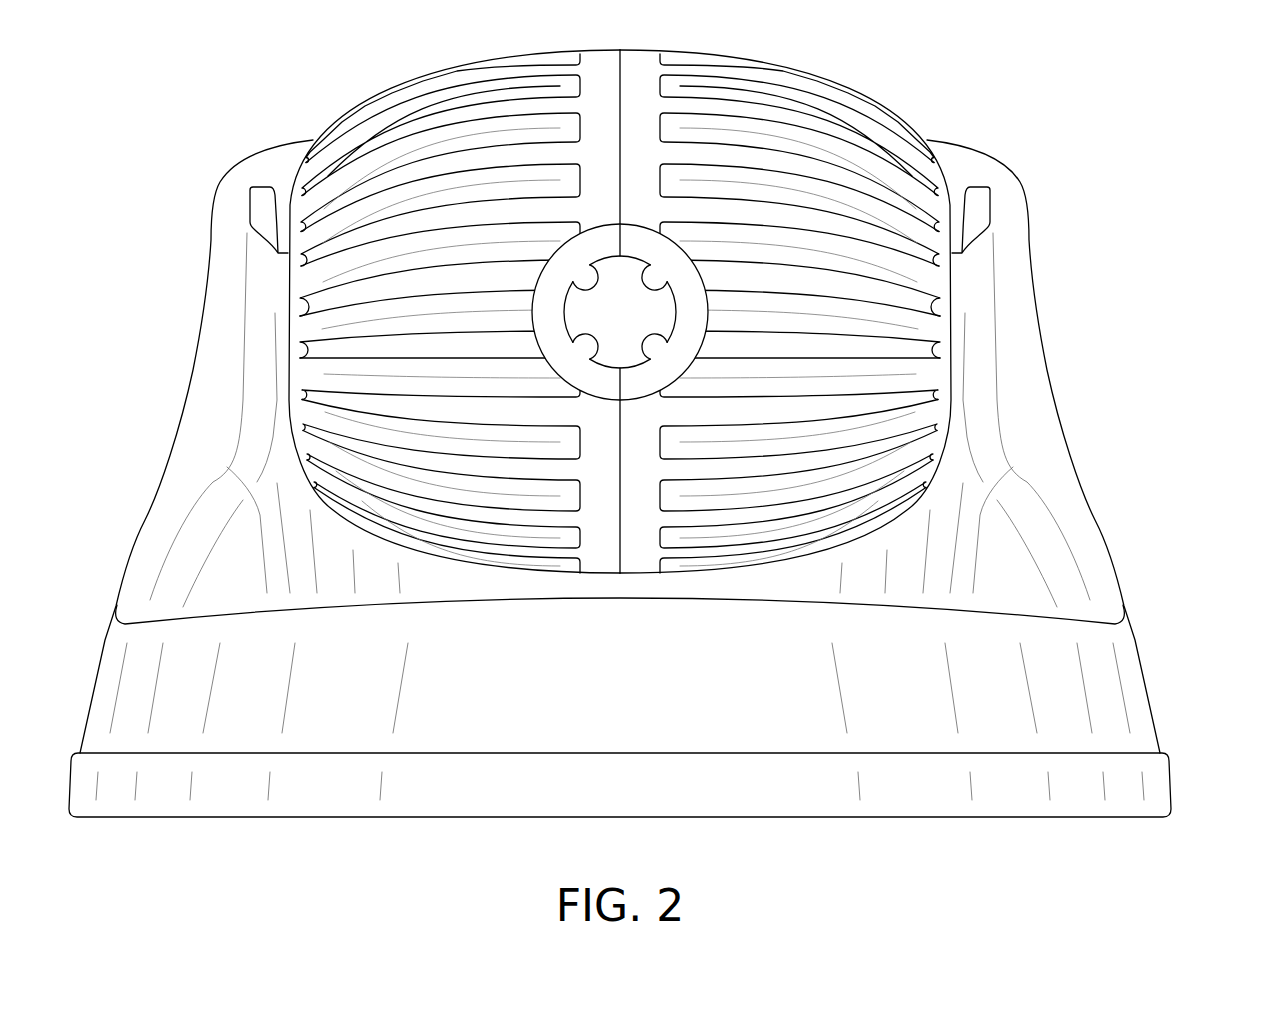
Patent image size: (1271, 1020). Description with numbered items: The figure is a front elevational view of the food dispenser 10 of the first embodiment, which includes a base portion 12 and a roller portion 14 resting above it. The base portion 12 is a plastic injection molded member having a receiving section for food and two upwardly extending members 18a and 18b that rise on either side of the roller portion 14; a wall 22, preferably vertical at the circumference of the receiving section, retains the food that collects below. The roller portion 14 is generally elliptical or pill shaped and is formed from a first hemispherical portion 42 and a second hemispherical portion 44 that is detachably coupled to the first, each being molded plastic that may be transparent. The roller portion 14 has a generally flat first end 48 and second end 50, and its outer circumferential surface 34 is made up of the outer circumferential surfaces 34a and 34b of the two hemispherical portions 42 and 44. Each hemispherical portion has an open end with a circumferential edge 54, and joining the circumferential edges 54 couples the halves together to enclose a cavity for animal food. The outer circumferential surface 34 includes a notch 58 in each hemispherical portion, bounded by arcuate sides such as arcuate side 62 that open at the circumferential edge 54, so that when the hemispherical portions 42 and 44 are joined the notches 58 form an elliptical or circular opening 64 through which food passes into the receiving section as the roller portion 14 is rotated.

The food dispenser 10 is at (1102, 200).
The base portion 12 is at (1122, 588).
The roller portion 14 is at (366, 90).
The upwardly extending member 18a is at (208, 257).
The upwardly extending member 18b is at (1037, 287).
The wall 22 is at (1122, 692).
The outer circumferential surface 34 is at (740, 52).
The outer circumferential surface 34a is at (895, 95).
The outer circumferential surface 34b is at (456, 68).
The first hemispherical portion 42 is at (826, 68).
The second hemispherical portion 44 is at (522, 52).
The first end 48 is at (953, 192).
The second end 50 is at (290, 190).
The circumferential edge 54 is at (622, 86).
The notch 58 is at (660, 347).
The arcuate side 62 is at (588, 276).
The opening 64 is at (587, 353).